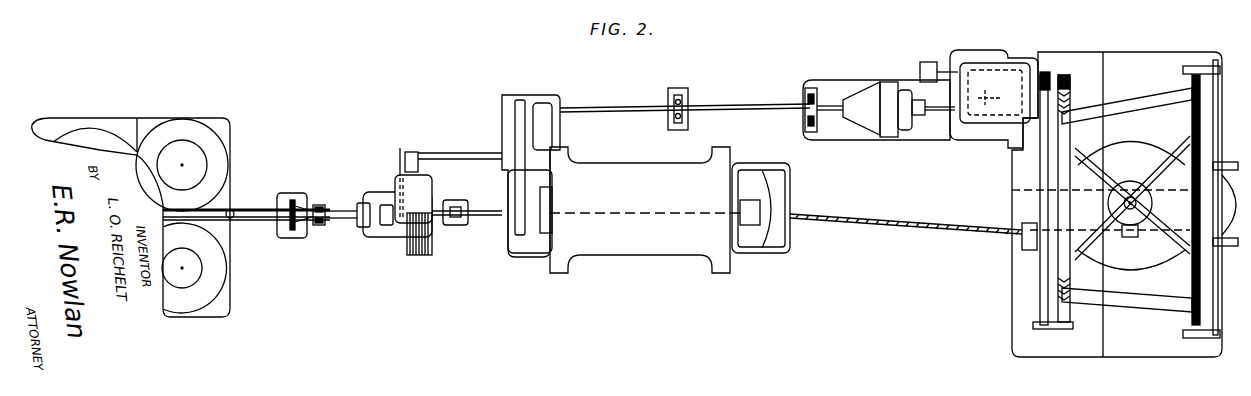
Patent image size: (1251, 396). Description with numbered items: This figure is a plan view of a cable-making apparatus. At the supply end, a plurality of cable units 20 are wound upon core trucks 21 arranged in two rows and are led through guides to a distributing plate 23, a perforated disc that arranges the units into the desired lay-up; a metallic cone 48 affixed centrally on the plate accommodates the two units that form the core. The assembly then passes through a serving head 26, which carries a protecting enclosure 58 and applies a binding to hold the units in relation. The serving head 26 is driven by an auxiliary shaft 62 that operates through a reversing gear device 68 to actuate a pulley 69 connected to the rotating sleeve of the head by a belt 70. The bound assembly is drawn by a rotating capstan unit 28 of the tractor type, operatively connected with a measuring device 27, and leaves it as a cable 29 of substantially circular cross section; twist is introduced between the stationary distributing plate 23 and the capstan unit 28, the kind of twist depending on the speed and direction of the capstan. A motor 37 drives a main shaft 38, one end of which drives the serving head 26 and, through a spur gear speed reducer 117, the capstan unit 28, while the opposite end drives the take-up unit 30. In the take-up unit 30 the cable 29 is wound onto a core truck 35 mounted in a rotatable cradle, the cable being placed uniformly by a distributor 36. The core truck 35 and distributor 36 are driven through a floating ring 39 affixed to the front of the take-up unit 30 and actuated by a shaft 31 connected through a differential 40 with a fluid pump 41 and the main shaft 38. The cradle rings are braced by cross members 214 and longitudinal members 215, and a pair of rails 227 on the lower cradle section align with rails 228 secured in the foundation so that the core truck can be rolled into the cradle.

The core truck 21 is at (150, 122).
The cable unit 20 is at (233, 205).
The distributing plate 23 is at (300, 198).
The metallic cone 48 is at (300, 232).
The serving head 26 is at (389, 181).
The belt 70 is at (413, 199).
The protecting enclosure 58 is at (408, 246).
The reversing gear device 68 is at (412, 150).
The pulley 69 is at (400, 140).
The auxiliary shaft 62 is at (418, 152).
The measuring device 27 is at (458, 226).
The spur gear speed reducer 117 is at (521, 91).
The capstan unit 28 is at (636, 262).
The cable 29 is at (849, 216).
The main shaft 38 is at (722, 104).
The motor 37 is at (891, 84).
The fluid pump 41 is at (931, 61).
The differential 40 is at (1004, 66).
The shaft 31 is at (1030, 56).
The take-up unit 30 is at (1127, 82).
The longitudinal member 215 is at (1166, 104).
The core truck 35 is at (1130, 142).
The cross member 214 is at (1152, 190).
The rail 228 is at (1225, 198).
The rail 227 is at (1012, 190).
The distributor 36 is at (1022, 242).
The floating ring 39 is at (1060, 322).